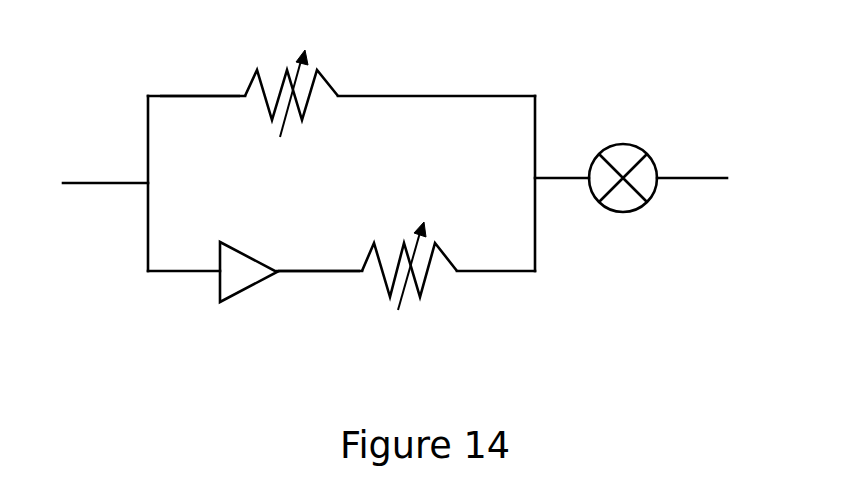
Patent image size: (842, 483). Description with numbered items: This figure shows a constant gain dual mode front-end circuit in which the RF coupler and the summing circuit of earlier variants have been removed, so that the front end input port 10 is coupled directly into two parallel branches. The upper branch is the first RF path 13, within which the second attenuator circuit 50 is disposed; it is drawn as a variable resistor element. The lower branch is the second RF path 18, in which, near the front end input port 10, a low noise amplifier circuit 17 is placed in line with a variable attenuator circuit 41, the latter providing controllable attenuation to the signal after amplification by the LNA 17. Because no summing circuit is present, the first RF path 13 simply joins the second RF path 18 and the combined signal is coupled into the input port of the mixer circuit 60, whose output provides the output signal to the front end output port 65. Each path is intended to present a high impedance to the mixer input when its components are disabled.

The front end input port 10 is at (97, 183).
The first RF path 13 is at (185, 97).
The second attenuator circuit 50 is at (302, 107).
The low noise amplifier circuit 17 is at (245, 293).
The second RF path 18 is at (312, 272).
The variable attenuator circuit 41 is at (420, 285).
The mixer circuit 60 is at (640, 205).
The front end output port 65 is at (692, 178).